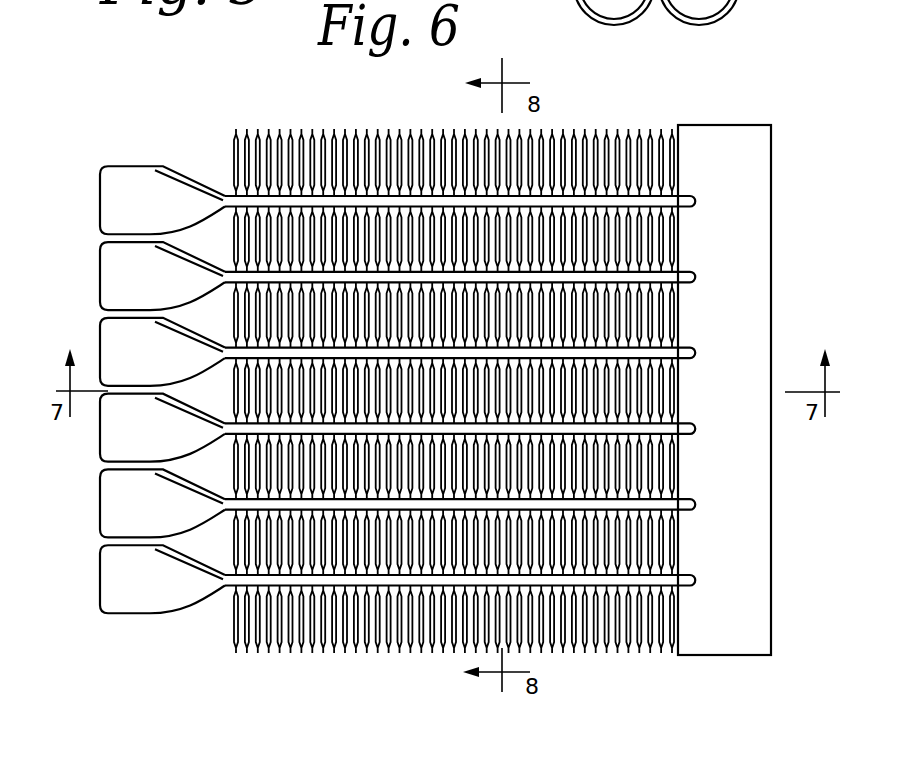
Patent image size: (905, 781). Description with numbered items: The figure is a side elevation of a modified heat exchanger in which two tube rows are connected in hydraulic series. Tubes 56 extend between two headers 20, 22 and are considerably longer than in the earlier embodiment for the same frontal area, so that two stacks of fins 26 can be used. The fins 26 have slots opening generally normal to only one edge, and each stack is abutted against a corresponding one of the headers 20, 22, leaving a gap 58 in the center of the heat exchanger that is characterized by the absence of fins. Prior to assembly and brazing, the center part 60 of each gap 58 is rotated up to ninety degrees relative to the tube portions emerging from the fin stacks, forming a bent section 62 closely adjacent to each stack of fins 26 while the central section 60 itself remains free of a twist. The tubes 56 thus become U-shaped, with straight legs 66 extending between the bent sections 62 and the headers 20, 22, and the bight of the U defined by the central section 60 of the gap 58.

In FIG. 5, the header 20 is at (746, 4).
In FIG. 5, the header 22 is at (577, 7).
In FIG. 6, the header 22 is at (760, 253).
In FIG. 6, the fins 26 is at (355, 132).
In FIG. 6, the tubes 56 is at (684, 200).
In FIG. 6, the gap 58 is at (136, 344).
In FIG. 6, the central section of the gap 60 is at (102, 202).
In FIG. 6, the bent section 62 is at (188, 203).
In FIG. 6, the legs 66 is at (437, 135).